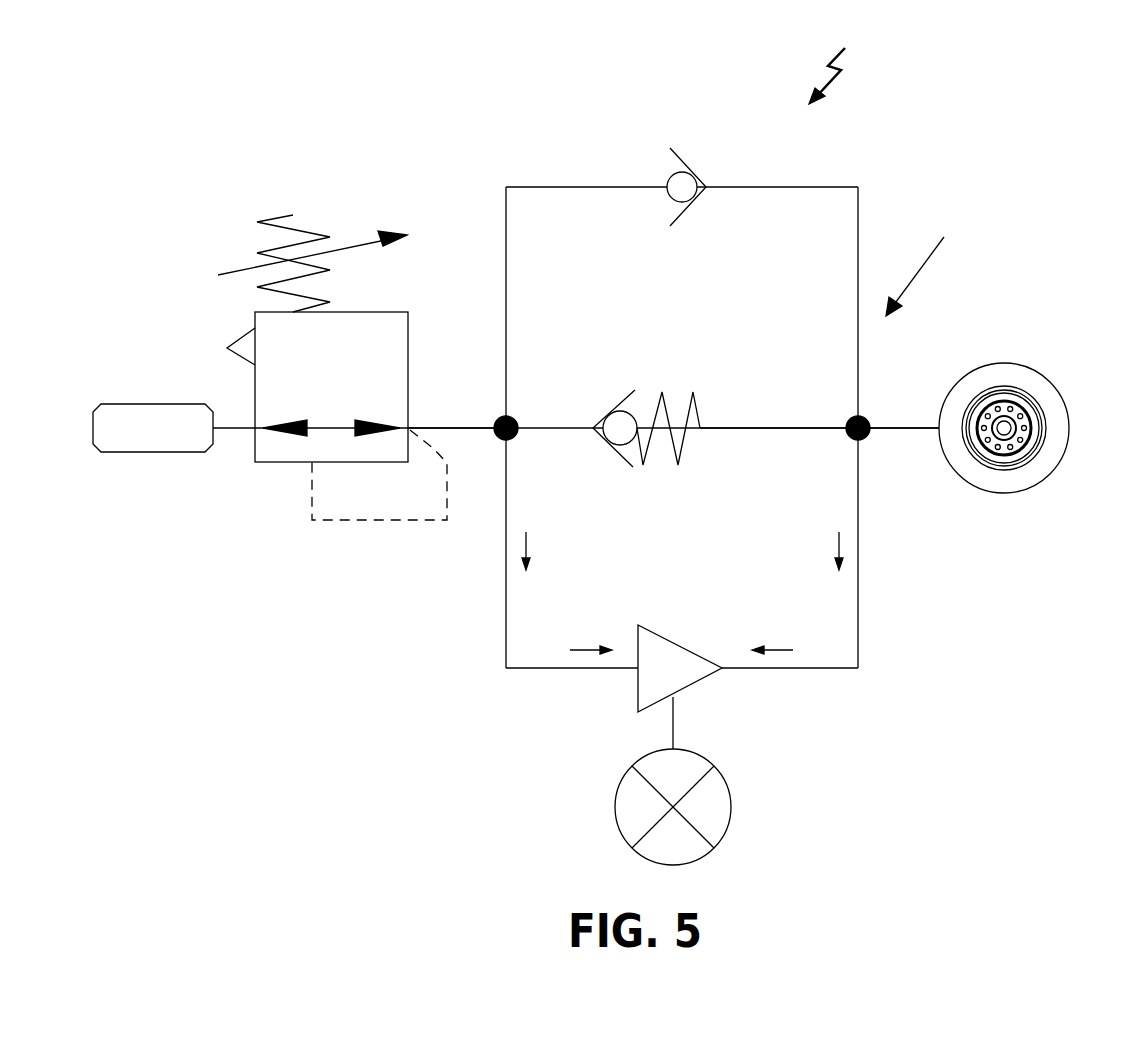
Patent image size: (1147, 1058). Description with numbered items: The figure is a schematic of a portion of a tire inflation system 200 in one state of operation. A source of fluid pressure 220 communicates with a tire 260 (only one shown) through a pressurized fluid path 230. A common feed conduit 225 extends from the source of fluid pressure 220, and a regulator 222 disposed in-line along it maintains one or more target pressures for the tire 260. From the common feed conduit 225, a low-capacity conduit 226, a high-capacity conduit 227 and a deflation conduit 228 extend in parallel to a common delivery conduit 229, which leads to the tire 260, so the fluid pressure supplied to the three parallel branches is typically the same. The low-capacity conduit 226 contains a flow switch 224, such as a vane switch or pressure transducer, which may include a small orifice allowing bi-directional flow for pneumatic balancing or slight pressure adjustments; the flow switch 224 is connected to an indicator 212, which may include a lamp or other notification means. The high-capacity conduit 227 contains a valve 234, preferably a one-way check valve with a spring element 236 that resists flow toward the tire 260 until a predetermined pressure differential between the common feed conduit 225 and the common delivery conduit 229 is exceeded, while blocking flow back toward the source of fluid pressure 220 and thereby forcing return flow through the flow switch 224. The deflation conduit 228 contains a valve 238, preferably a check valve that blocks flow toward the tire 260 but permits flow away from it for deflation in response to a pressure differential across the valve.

The tire inflation system 200 is at (847, 67).
The indicator 212 is at (732, 793).
The source of fluid pressure 220 is at (133, 404).
The regulator 222 is at (390, 312).
The flow switch 224 is at (693, 687).
The common feed conduit 225 is at (432, 428).
The low-capacity conduit 226 is at (557, 670).
The high-capacity conduit 227 is at (757, 428).
The deflation conduit 228 is at (792, 187).
The common delivery conduit 229 is at (890, 426).
The pressurized fluid path 230 is at (932, 264).
The valve 234 is at (632, 395).
The spring element 236 is at (693, 395).
The valve 238 is at (693, 205).
The tire 260 is at (1055, 380).